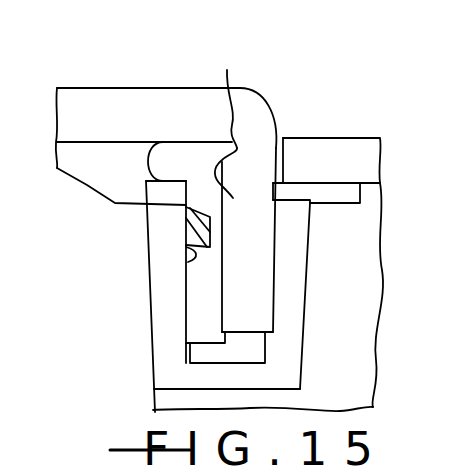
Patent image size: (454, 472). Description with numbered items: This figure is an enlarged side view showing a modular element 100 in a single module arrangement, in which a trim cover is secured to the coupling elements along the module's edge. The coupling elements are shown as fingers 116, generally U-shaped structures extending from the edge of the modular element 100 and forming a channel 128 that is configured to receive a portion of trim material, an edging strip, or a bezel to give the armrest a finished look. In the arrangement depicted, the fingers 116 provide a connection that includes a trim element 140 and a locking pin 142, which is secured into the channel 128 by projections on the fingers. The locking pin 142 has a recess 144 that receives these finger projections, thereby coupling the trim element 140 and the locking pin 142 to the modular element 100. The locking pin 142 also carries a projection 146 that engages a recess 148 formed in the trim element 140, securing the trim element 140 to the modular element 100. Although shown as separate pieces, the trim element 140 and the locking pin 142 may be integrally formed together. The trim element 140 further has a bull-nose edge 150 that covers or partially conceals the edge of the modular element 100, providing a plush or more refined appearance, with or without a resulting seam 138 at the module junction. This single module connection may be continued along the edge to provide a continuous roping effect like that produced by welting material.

The modular element 100 is at (349, 224).
The fingers 116 is at (160, 280).
The channel 128 is at (240, 346).
The seam 138 is at (287, 150).
The trim element 140 is at (268, 140).
The locking pin 142 is at (190, 163).
The recess 144 is at (185, 243).
The projection 146 is at (243, 186).
The recess 148 is at (241, 189).
The bull-nose edge 150 is at (267, 100).